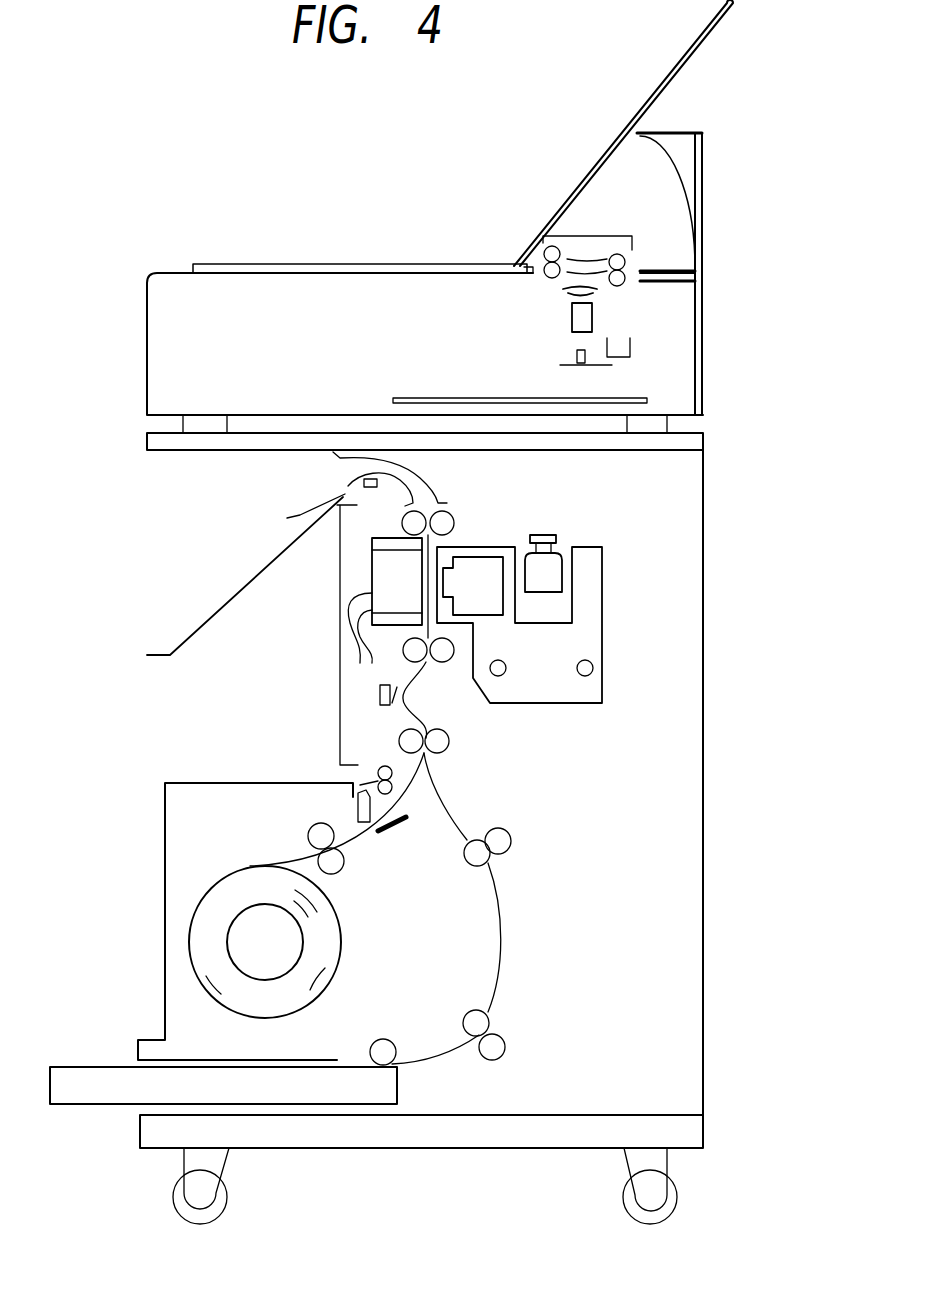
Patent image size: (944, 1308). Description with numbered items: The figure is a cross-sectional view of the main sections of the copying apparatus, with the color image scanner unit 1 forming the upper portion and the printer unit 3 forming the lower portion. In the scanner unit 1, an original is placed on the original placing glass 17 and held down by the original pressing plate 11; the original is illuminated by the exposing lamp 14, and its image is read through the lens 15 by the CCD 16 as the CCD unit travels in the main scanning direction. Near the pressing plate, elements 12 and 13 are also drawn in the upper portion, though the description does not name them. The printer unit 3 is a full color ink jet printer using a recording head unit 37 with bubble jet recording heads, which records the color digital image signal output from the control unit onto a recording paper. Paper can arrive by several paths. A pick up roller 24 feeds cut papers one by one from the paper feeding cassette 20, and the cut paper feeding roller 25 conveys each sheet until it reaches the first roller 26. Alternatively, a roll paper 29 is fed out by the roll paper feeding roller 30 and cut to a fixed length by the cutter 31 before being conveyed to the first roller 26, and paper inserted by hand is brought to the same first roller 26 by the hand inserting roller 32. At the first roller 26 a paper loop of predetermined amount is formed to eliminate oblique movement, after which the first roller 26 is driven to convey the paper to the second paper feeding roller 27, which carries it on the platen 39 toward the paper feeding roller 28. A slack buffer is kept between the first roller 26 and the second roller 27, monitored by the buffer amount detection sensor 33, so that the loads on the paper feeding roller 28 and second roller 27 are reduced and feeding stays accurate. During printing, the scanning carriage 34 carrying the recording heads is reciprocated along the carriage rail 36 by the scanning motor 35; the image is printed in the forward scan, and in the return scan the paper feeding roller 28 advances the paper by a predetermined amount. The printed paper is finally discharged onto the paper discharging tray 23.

The color image scanner unit 1 is at (703, 373).
The printer unit 3 is at (703, 777).
The original pressing plate 11 is at (731, 6).
The feed rollers 12 is at (607, 236).
The guide 13 is at (702, 147).
The exposing lamp 14 is at (597, 297).
The lens 15 is at (593, 318).
The CCD 16 is at (573, 355).
The original placing glass 17 is at (247, 263).
The paper feeding cassette 20 is at (82, 1104).
The paper discharging tray 23 is at (220, 607).
The pick up roller 24 is at (375, 1041).
The cut paper feeding roller 25 is at (511, 843).
The first roller 26 is at (449, 746).
The second paper feeding roller 27 is at (423, 660).
The paper feeding roller 28 is at (348, 490).
The roll paper 29 is at (236, 868).
The roll paper feeding roller 30 is at (343, 866).
The cutter 31 is at (393, 832).
The hand inserting roller 32 is at (380, 768).
The buffer amount detection sensor 33 is at (380, 693).
The scanning carriage 34 is at (602, 683).
The scanning motor 35 is at (560, 546).
The carriage rail 36 is at (506, 663).
The recording head unit 37 is at (505, 583).
The platen 39 is at (420, 584).